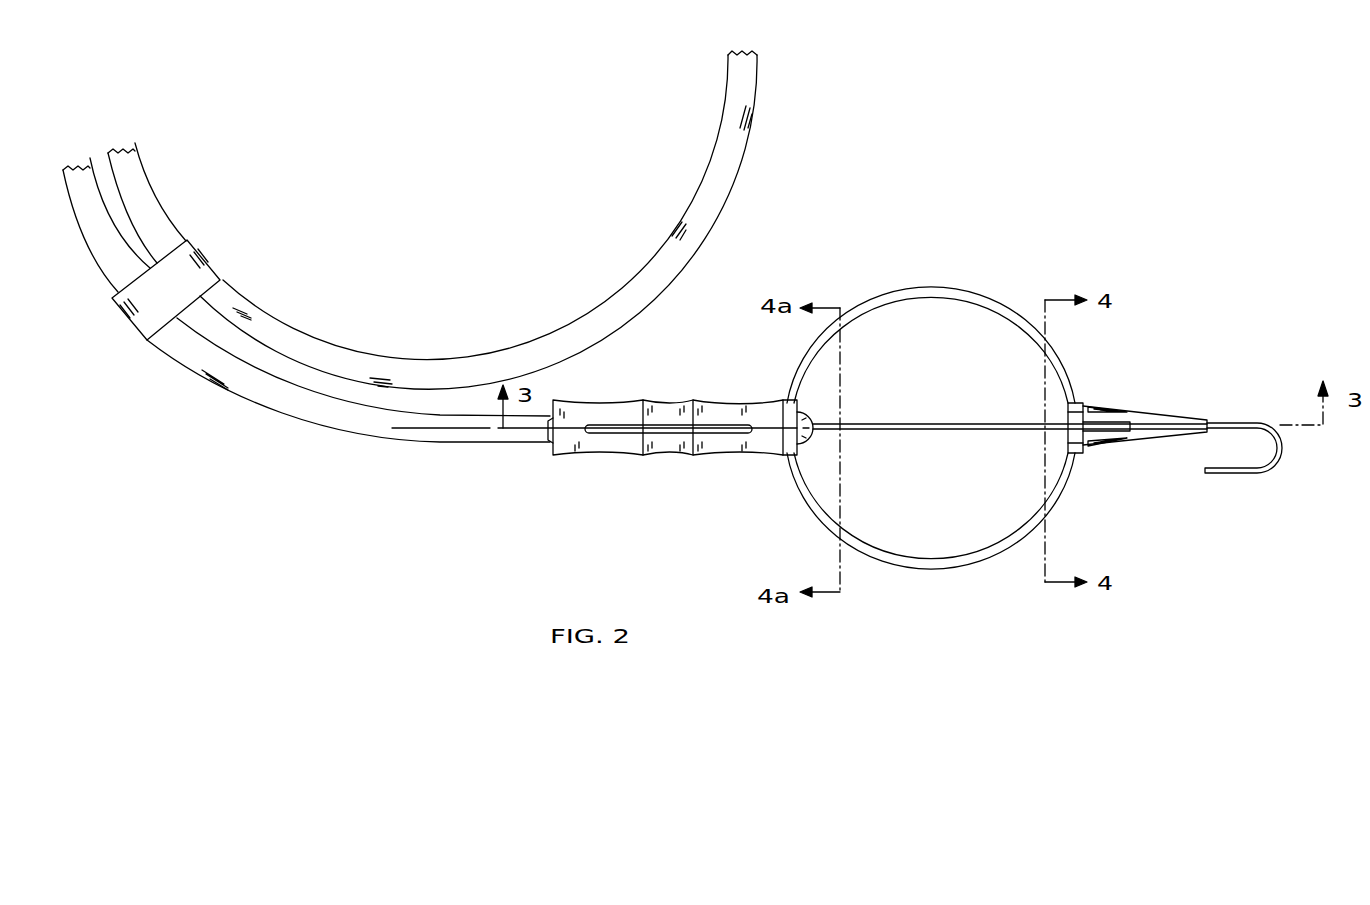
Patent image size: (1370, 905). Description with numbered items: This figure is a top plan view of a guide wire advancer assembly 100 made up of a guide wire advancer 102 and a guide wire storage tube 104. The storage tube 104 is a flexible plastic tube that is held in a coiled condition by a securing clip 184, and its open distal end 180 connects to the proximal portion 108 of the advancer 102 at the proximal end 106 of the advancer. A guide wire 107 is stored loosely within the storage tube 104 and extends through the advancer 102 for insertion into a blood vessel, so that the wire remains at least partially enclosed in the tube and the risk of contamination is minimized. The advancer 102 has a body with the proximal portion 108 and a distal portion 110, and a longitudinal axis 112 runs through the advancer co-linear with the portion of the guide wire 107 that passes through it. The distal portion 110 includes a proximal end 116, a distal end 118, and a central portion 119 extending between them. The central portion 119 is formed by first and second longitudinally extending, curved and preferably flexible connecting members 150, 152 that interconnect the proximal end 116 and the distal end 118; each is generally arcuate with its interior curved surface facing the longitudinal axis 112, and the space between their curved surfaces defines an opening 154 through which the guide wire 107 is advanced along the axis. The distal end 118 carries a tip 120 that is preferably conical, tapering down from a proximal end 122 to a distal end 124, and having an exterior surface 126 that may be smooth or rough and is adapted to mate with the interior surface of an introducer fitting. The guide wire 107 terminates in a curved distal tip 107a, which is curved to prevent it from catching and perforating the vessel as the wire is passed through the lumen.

The guide wire advancer assembly 100 is at (863, 147).
The guide wire advancer 102 is at (902, 267).
The guide wire storage tube 104 is at (755, 103).
The proximal end 106 is at (552, 458).
The guide wire 107 is at (922, 422).
The distal tip 107a is at (1258, 478).
The proximal portion 108 is at (720, 452).
The distal portion 110 is at (918, 424).
The longitudinal axis 112 is at (1259, 434).
The proximal end 116 is at (802, 398).
The distal end 118 is at (1143, 415).
The central portion 119 is at (955, 290).
The tip 120 is at (1185, 410).
The proximal end 122 is at (1093, 450).
The distal end 124 is at (1197, 440).
The exterior surface 126 is at (1150, 443).
The first connecting member 150 is at (1013, 308).
The second connecting member 152 is at (818, 517).
The opening 154 is at (920, 500).
The open distal end 180 is at (550, 443).
The securing clip 184 is at (207, 258).